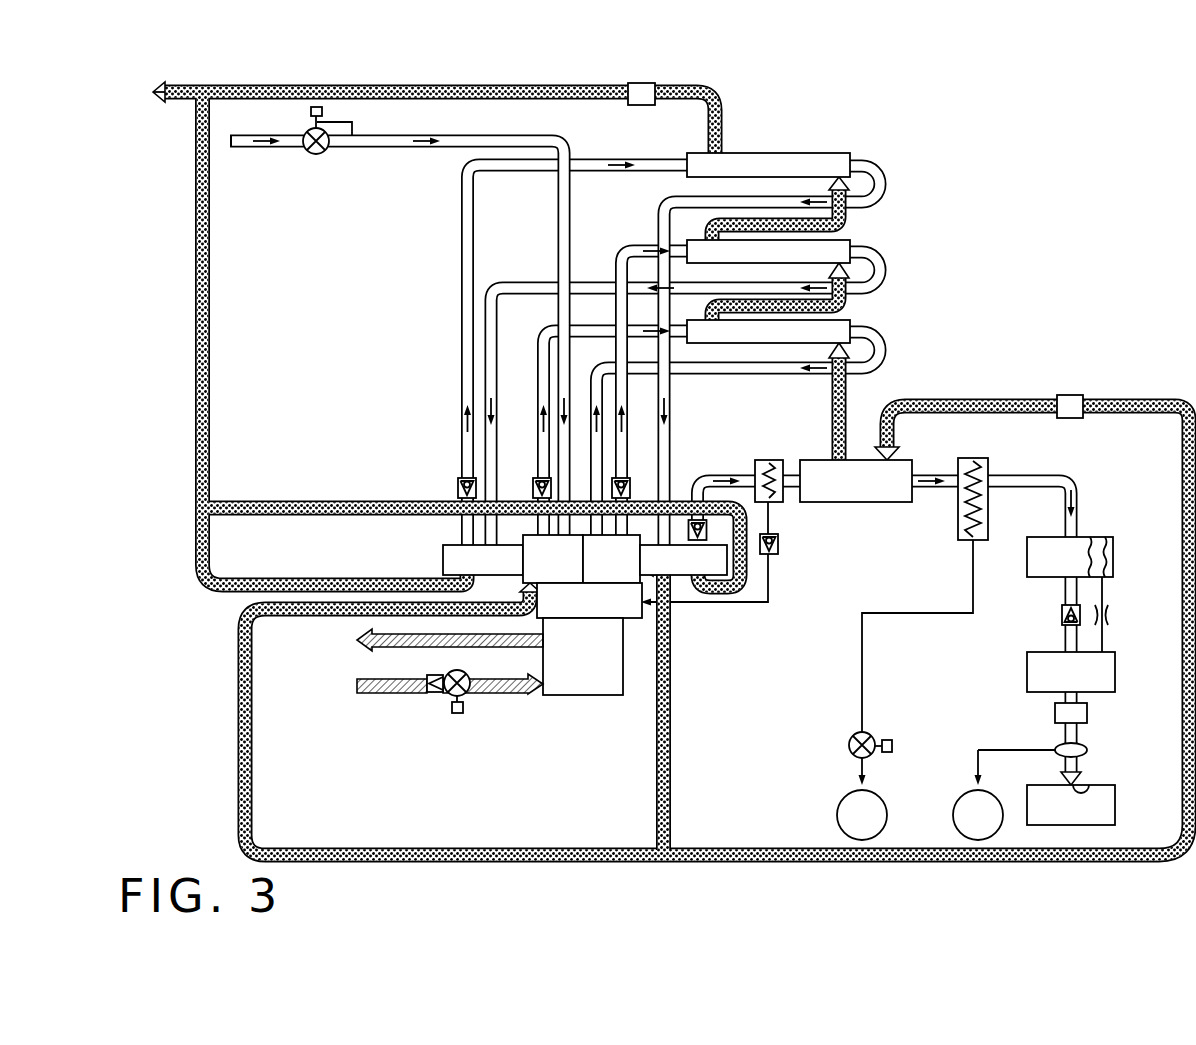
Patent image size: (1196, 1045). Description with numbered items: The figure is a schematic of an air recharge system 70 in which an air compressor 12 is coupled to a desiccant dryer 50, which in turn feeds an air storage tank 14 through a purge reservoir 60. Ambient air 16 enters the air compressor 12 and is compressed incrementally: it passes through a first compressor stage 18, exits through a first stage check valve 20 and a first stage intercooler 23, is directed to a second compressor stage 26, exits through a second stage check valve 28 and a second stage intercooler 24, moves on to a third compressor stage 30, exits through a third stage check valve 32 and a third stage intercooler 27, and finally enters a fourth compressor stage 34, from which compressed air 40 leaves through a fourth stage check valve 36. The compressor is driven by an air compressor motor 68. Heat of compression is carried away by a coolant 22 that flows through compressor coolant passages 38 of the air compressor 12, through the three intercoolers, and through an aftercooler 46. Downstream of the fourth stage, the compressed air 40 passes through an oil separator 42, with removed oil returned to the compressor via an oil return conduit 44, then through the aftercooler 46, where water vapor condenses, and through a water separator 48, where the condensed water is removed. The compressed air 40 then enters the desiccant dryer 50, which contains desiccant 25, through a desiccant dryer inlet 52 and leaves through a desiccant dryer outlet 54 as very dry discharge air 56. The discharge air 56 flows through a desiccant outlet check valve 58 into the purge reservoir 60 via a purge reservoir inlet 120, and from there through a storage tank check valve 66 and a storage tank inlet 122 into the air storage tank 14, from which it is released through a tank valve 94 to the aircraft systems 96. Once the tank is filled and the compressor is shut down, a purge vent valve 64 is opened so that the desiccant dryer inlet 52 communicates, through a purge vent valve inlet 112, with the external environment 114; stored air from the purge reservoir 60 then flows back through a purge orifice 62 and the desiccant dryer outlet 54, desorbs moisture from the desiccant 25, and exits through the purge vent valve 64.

The air compressor 12 is at (563, 718).
The air storage tank 14 is at (1093, 789).
The ambient air 16 is at (240, 146).
The first compressor stage 18 is at (539, 573).
The first stage check valve 20 is at (535, 478).
The coolant 22 is at (1005, 400).
The first stage intercooler 23 is at (848, 328).
The second stage intercooler 24 is at (848, 244).
The desiccant 25 is at (1113, 548).
The second compressor stage 26 is at (598, 573).
The third stage intercooler 27 is at (843, 156).
The second stage check valve 28 is at (628, 485).
The third compressor stage 30 is at (469, 573).
The third stage check valve 32 is at (456, 485).
The fourth compressor stage 34 is at (683, 573).
The fourth stage check valve 36 is at (684, 527).
The compressor coolant passages 38 is at (672, 650).
The compressed air 40 is at (740, 476).
The oil separator 42 is at (775, 460).
The oil return conduit 44 is at (770, 590).
The aftercooler 46 is at (842, 494).
The water separator 48 is at (980, 458).
The desiccant dryer 50 is at (1101, 551).
The desiccant dryer inlet 52 is at (1078, 535).
The desiccant dryer outlet 54 is at (1062, 580).
The discharge air 56 is at (1062, 597).
The desiccant outlet check valve 58 is at (1062, 616).
The purge reservoir 60 is at (1057, 685).
The purge orifice 62 is at (1113, 620).
The purge vent valve 64 is at (893, 746).
The storage tank check valve 66 is at (1087, 713).
The air compressor motor 68 is at (564, 670).
The air recharge system 70 is at (984, 119).
The tank valve 94 is at (1087, 750).
The aircraft systems 96 is at (978, 815).
The purge vent valve inlet 112 is at (874, 728).
The external environment 114 is at (862, 815).
The purge reservoir inlet 120 is at (1064, 640).
The storage tank inlet 122 is at (1085, 790).